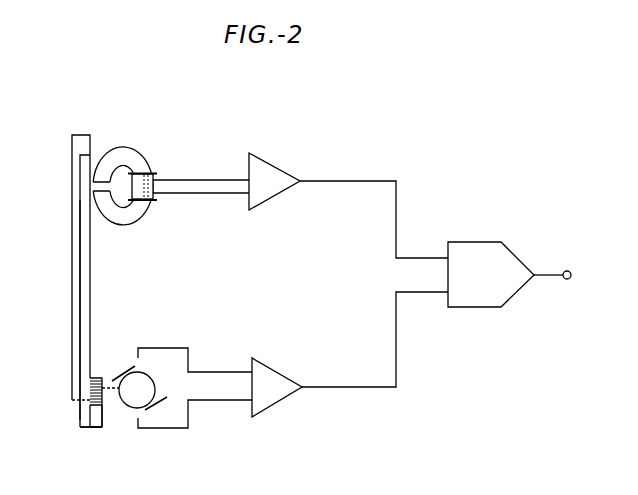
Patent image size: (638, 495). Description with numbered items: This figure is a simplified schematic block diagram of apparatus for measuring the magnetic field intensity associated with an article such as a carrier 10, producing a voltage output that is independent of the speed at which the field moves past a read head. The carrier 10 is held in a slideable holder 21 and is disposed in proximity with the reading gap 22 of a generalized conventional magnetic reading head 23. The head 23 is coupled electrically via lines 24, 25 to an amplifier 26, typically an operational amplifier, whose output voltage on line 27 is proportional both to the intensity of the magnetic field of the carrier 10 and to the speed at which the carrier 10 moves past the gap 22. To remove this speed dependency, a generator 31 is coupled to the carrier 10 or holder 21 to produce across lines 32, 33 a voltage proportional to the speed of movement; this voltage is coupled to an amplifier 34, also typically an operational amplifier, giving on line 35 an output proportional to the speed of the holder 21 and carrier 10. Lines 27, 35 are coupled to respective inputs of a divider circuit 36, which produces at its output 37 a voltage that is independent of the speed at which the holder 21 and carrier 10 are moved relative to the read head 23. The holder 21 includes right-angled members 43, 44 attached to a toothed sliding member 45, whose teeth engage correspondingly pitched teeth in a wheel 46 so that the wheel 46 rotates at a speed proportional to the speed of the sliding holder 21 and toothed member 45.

The carrier 10 is at (66, 277).
The slideable holder 21 is at (70, 426).
The reading gap 22 is at (128, 172).
The magnetic reading head 23 is at (140, 160).
The line 24 is at (190, 178).
The line 25 is at (197, 196).
The amplifier 26 is at (277, 165).
The line 27 is at (342, 178).
The generator 31 is at (140, 371).
The line 32 is at (213, 370).
The line 33 is at (223, 402).
The amplifier 34 is at (282, 368).
The line 35 is at (345, 382).
The divider circuit 36 is at (487, 242).
The output 37 is at (550, 272).
The right-angled member 43 is at (92, 300).
The right-angled member 44 is at (78, 410).
The toothed sliding member 45 is at (103, 416).
The wheel 46 is at (97, 377).